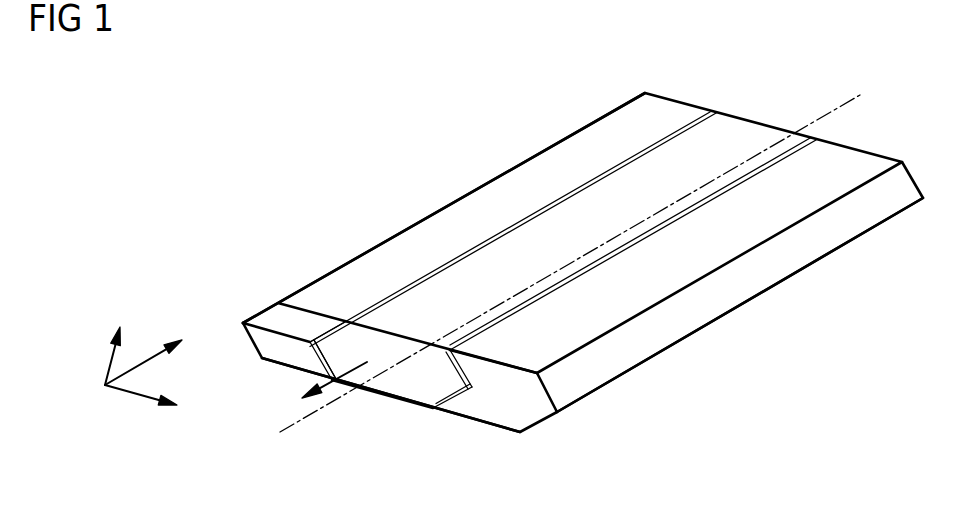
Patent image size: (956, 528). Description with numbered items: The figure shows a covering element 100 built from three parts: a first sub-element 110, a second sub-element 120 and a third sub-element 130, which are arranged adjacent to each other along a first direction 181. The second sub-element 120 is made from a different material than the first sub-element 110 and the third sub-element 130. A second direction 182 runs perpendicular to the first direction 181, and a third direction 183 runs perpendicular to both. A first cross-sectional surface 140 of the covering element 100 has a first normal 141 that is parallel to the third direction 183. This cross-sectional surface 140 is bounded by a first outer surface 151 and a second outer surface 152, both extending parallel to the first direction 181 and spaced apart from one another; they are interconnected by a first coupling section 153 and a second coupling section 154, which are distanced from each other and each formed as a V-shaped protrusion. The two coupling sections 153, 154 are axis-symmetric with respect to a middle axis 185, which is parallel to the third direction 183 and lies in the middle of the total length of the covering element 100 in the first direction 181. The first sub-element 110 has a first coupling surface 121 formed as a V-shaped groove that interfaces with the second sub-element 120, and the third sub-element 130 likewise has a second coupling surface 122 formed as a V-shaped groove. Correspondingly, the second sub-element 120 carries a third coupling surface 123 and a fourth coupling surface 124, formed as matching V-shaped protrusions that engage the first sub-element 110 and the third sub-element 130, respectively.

The covering element 100 is at (556, 245).
The first sub-element 110 is at (597, 140).
The second sub-element 120 is at (545, 272).
The first coupling surface 121 is at (305, 338).
The second coupling surface 122 is at (458, 380).
The third coupling surface 123 is at (327, 358).
The fourth coupling surface 124 is at (480, 361).
The third sub-element 130 is at (807, 248).
The first cross-sectional surface 140 is at (262, 335).
The first normal 141 is at (332, 380).
The first outer surface 151 is at (348, 322).
The second outer surface 152 is at (283, 364).
The first coupling section 153 is at (260, 312).
The second coupling section 154 is at (560, 412).
The first direction 181 is at (127, 391).
The second direction 182 is at (110, 362).
The third direction 183 is at (142, 362).
The middle axis 185 is at (678, 200).